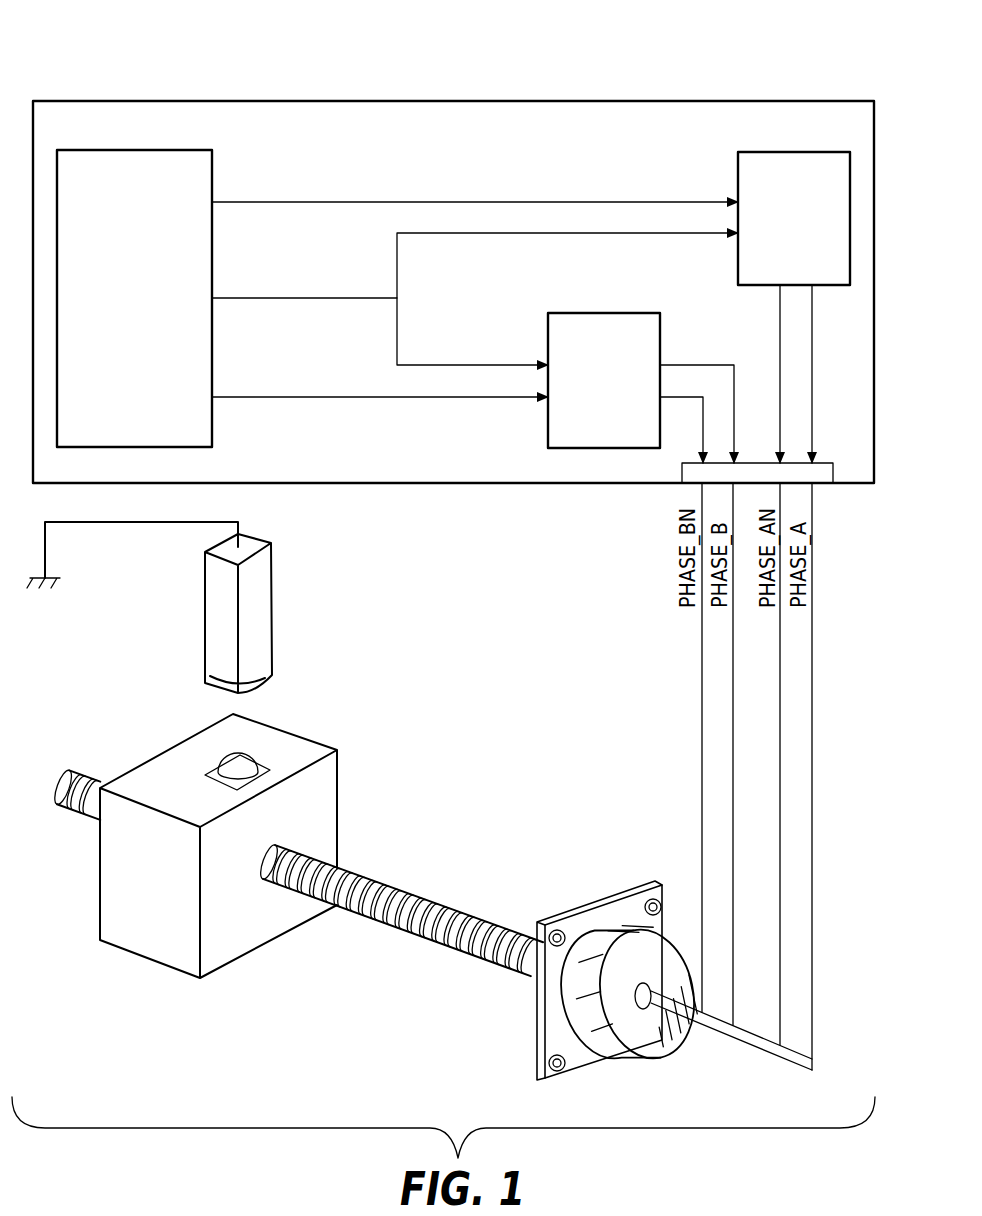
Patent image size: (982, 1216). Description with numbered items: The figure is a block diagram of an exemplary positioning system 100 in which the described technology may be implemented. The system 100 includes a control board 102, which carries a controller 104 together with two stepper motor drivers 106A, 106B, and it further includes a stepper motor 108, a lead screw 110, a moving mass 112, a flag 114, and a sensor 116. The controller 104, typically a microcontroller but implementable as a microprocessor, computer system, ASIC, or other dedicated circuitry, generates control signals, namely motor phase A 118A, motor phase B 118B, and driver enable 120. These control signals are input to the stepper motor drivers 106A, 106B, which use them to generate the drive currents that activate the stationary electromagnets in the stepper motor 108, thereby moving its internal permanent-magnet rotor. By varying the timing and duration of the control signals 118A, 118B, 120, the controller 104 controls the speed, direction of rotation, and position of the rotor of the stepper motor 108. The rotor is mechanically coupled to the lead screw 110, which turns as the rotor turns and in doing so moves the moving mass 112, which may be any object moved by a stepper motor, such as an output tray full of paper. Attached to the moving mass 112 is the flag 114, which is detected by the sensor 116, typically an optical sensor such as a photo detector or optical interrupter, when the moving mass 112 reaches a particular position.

The positioning system 100 is at (130, 60).
The control board 102 is at (328, 100).
The controller 104 is at (173, 148).
The stepper motor driver 106A is at (822, 152).
The stepper motor driver 106B is at (663, 343).
The stepper motor 108 is at (653, 1040).
The lead screw 110 is at (415, 905).
The moving mass 112 is at (327, 818).
The flag 114 is at (240, 758).
The sensor 116 is at (262, 652).
The motor phase A 118A is at (377, 203).
The motor phase B 118B is at (377, 398).
The driver enable 120 is at (377, 300).